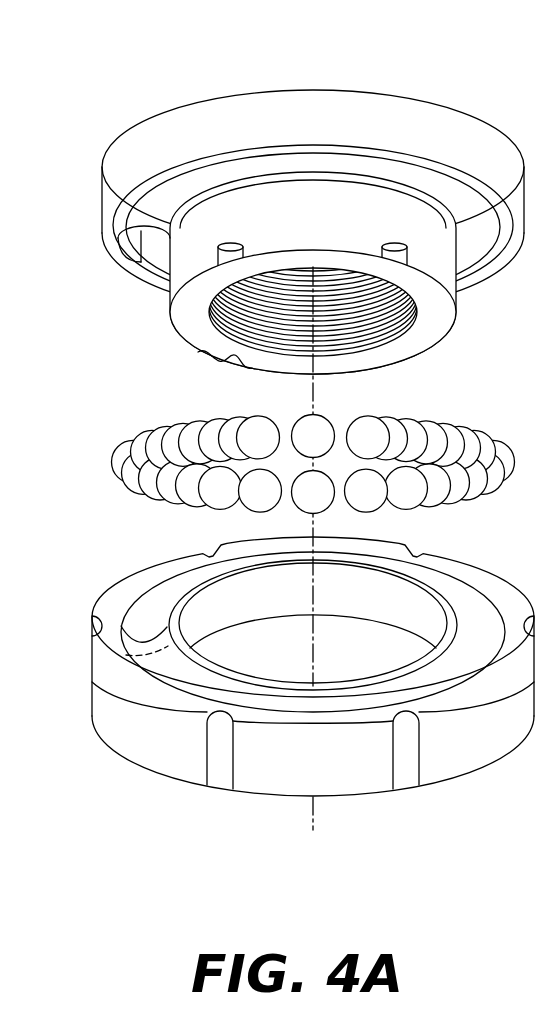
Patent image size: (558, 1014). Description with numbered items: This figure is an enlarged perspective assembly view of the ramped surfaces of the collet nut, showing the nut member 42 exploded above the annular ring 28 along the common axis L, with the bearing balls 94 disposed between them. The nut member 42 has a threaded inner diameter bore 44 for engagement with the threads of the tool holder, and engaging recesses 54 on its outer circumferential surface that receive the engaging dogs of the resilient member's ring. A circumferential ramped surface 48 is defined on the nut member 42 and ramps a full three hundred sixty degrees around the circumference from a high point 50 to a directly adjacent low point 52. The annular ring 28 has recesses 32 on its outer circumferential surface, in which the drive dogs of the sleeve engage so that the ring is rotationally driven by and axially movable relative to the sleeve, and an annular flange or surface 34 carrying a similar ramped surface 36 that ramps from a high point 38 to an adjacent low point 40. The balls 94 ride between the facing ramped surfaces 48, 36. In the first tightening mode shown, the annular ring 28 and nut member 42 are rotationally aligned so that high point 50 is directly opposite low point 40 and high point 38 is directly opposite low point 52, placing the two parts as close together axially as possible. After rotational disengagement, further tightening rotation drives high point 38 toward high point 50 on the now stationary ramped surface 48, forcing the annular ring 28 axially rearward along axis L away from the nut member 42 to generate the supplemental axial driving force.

The annular ring 28 is at (483, 768).
The recesses 32 is at (218, 768).
The annular flange or surface 34 is at (467, 572).
The ramped surface 36 is at (328, 700).
The high point 38 is at (145, 634).
The low point 40 is at (130, 657).
The nut member 42 is at (303, 103).
The threaded inner diameter bore 44 is at (240, 330).
The ramped surface 48 is at (200, 180).
The high point 50 is at (140, 255).
The low point 52 is at (143, 217).
The engaging recesses 54 is at (244, 256).
The balls 94 is at (116, 453).
The axis L is at (310, 383).